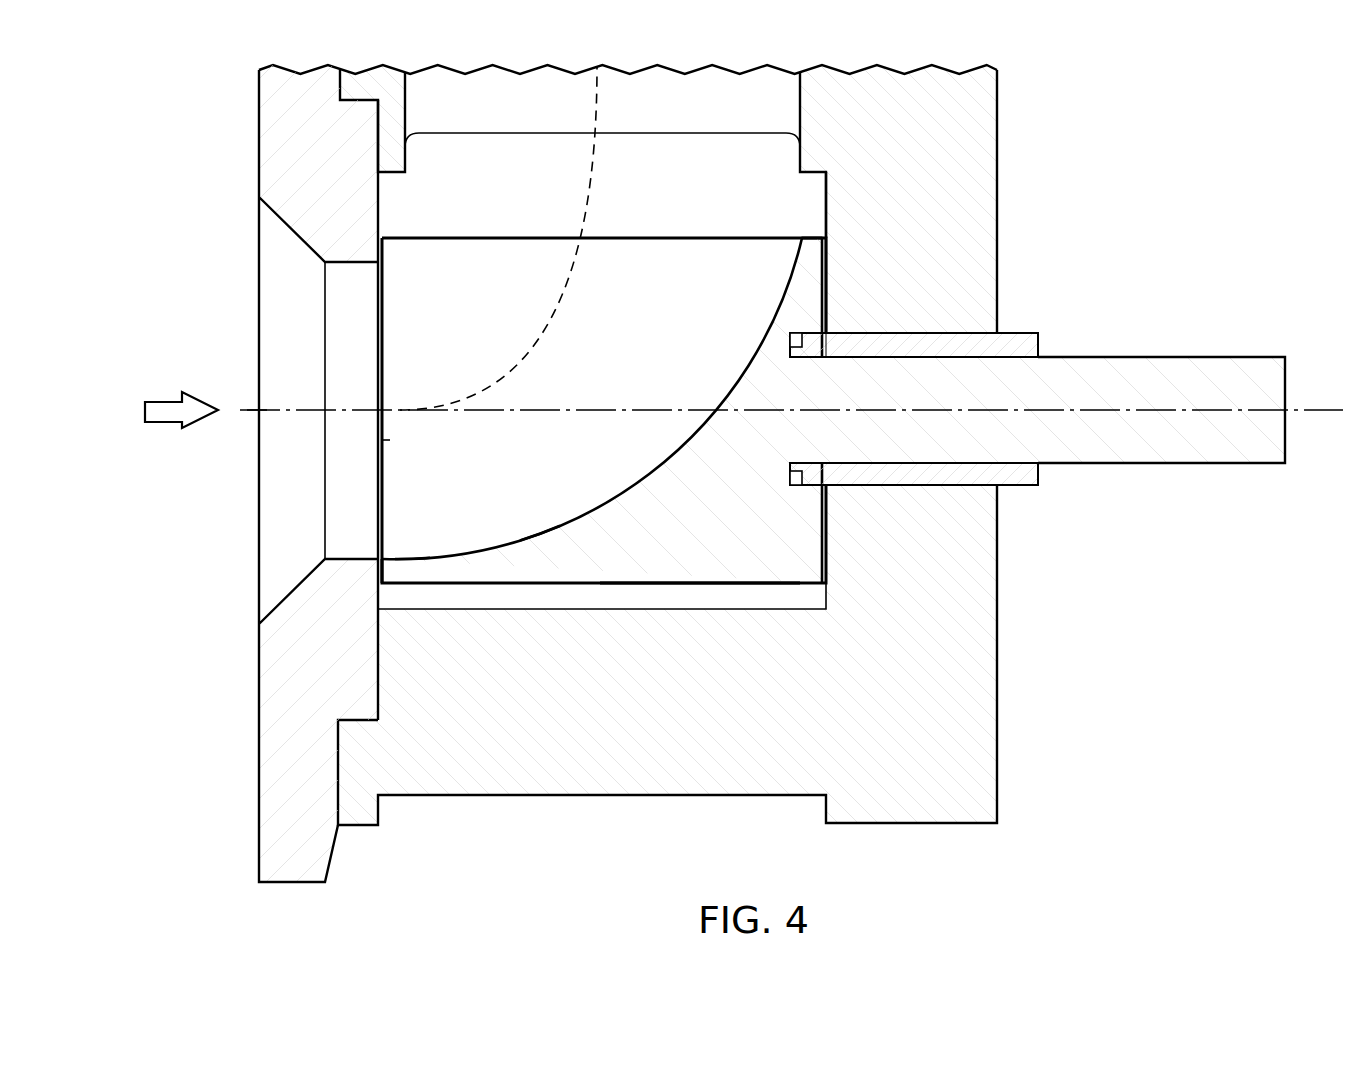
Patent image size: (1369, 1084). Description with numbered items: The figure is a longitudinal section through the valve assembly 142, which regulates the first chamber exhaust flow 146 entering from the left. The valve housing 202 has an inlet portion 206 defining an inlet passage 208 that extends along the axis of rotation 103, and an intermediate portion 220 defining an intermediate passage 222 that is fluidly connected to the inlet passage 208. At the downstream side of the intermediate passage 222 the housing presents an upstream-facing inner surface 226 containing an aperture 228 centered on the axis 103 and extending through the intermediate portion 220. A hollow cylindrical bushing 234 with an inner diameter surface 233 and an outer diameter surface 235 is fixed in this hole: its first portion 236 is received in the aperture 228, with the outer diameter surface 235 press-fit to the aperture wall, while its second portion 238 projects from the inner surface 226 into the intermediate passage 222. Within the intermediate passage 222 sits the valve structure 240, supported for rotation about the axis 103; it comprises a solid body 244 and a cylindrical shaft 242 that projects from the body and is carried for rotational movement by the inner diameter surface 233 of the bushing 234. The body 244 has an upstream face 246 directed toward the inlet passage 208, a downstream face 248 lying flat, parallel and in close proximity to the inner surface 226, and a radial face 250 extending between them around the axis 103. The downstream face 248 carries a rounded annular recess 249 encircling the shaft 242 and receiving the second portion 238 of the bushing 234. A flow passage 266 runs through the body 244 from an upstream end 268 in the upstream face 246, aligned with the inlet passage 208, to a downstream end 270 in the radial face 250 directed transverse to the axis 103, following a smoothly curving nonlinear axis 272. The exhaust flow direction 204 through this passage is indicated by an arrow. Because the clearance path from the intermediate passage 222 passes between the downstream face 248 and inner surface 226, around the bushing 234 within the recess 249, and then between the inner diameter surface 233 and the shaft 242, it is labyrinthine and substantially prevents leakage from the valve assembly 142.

The axis of rotation 103 is at (1313, 410).
The valve assembly 142 is at (118, 165).
The first chamber exhaust flow 146 is at (157, 400).
The valve housing 202 is at (985, 152).
The flow direction 204 is at (800, 551).
The inlet portion 206 is at (260, 141).
The inlet passage 208 is at (260, 297).
The intermediate portion 220 is at (642, 795).
The intermediate passage 222 is at (688, 202).
The upstream-facing inner surface 226 is at (826, 203).
The aperture 228 is at (905, 340).
The inner diameter surface 233 is at (990, 360).
The bushing 234 is at (860, 348).
The outer diameter surface 235 is at (1020, 333).
The first portion 236 is at (945, 485).
The second portion 238 is at (792, 478).
The valve structure 240 is at (497, 553).
The shaft 242 is at (1222, 360).
The body 244 is at (540, 535).
The upstream face 246 is at (380, 573).
The downstream face 248 is at (828, 560).
The recess 249 is at (796, 340).
The radial face 250 is at (692, 583).
The flow passage 266 is at (396, 442).
The upstream end 268 is at (405, 553).
The downstream end 270 is at (792, 270).
The nonlinear axis 272 is at (563, 300).